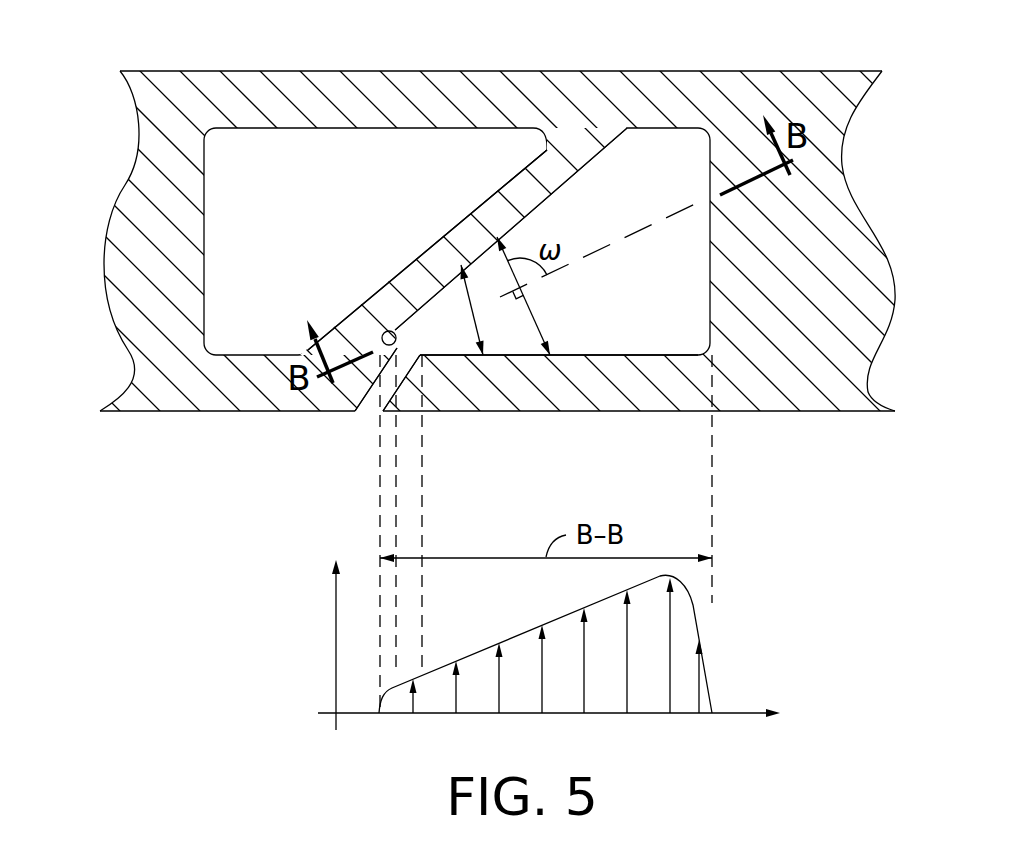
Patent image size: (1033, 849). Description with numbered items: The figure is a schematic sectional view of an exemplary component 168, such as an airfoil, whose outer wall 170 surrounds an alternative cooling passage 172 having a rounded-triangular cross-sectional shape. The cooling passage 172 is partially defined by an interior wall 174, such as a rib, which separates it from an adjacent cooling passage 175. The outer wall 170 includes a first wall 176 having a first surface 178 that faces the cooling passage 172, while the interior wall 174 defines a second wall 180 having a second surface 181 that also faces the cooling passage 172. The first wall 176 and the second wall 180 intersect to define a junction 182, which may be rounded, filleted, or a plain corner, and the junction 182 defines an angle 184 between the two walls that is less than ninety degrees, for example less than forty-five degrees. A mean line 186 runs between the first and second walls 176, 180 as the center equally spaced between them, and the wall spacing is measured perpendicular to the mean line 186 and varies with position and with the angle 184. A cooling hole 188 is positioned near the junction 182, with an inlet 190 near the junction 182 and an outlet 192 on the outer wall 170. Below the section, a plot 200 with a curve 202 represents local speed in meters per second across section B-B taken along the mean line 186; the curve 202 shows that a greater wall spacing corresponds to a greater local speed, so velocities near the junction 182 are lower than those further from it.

The component 168 is at (193, 63).
The outer wall 170 is at (390, 95).
The cooling passage 172 is at (653, 145).
The interior wall 174 is at (488, 195).
The adjacent cooling passage 175 is at (228, 248).
The first wall 176 is at (697, 401).
The first surface 178 is at (612, 354).
The second wall 180 is at (455, 222).
The second surface 181 is at (447, 300).
The junction 182 is at (347, 328).
The angle 184 is at (472, 300).
The mean line 186 is at (585, 262).
The cooling hole 188 is at (355, 400).
The inlet 190 is at (425, 358).
The outlet 192 is at (383, 414).
The plot 200 is at (588, 646).
The curve 202 is at (558, 620).